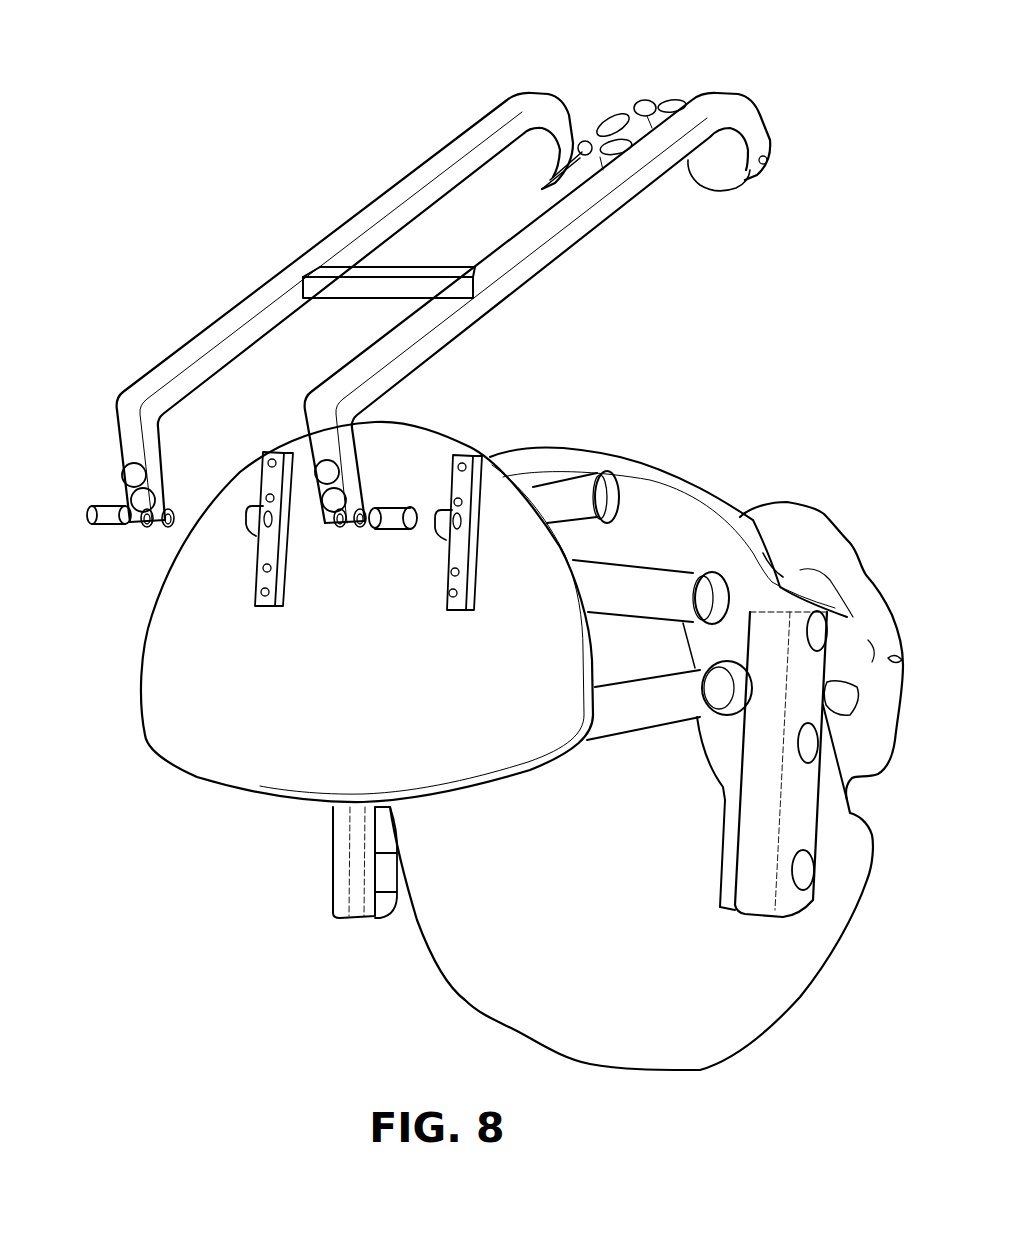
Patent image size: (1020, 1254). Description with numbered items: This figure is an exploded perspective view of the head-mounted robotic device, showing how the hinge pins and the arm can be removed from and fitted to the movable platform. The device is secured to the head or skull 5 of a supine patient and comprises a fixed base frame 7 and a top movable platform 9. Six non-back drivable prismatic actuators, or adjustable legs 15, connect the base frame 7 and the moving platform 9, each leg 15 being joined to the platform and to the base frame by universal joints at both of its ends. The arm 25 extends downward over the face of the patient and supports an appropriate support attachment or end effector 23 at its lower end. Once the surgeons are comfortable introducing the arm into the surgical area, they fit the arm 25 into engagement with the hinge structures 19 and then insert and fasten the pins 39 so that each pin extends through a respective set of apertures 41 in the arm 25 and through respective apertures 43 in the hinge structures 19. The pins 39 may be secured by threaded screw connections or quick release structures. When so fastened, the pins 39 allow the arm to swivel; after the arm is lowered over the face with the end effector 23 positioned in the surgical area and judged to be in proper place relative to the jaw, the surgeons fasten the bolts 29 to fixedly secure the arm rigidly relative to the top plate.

The head or skull 5 is at (477, 942).
The base frame 7 is at (762, 797).
The top movable platform 9 is at (176, 731).
The adjustable legs 15 is at (677, 697).
The hinge structures 19 is at (263, 540).
The end effector 23 is at (632, 112).
The arm 25 is at (257, 296).
The bolts 29 is at (136, 502).
The pins 39 is at (114, 524).
The apertures in the arm 41 is at (172, 512).
The apertures in the hinge structures 43 is at (280, 512).